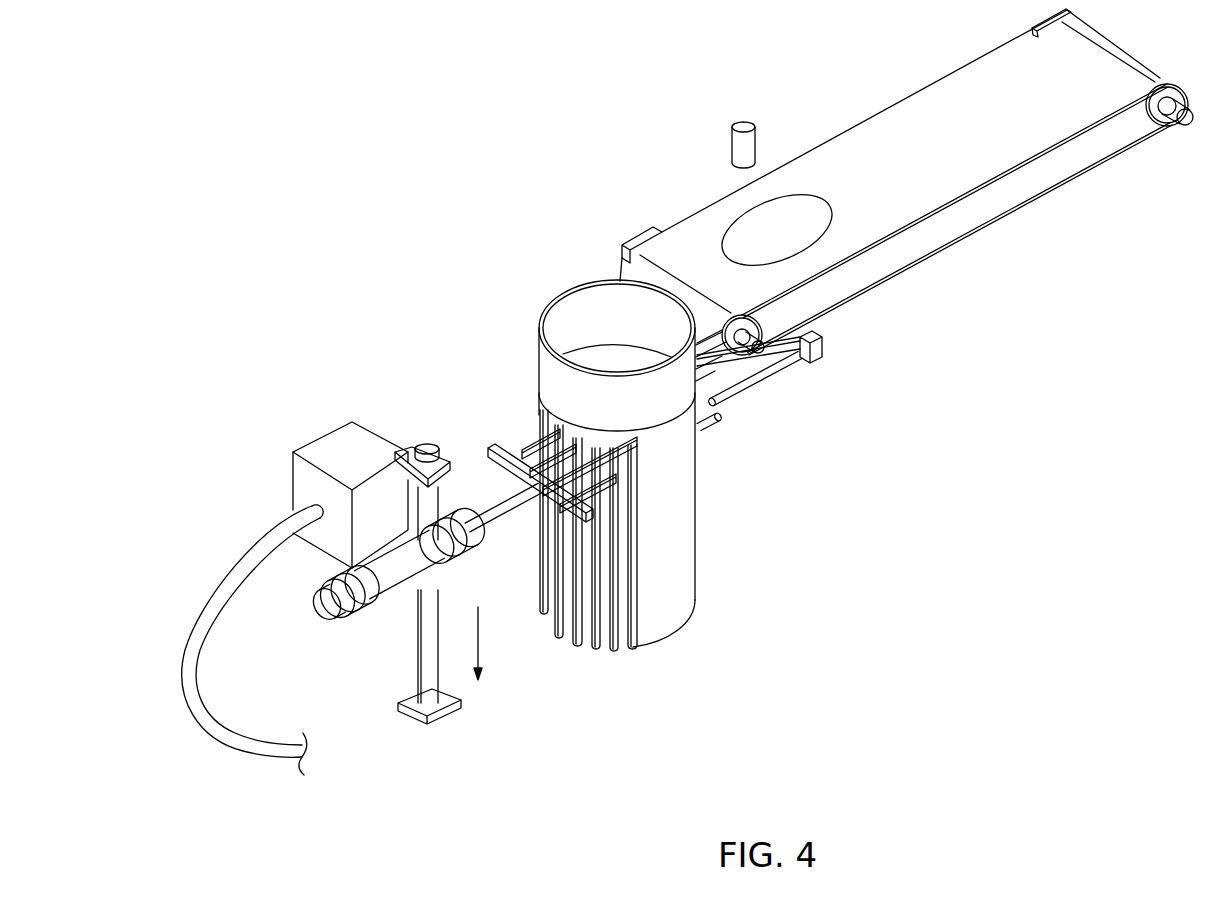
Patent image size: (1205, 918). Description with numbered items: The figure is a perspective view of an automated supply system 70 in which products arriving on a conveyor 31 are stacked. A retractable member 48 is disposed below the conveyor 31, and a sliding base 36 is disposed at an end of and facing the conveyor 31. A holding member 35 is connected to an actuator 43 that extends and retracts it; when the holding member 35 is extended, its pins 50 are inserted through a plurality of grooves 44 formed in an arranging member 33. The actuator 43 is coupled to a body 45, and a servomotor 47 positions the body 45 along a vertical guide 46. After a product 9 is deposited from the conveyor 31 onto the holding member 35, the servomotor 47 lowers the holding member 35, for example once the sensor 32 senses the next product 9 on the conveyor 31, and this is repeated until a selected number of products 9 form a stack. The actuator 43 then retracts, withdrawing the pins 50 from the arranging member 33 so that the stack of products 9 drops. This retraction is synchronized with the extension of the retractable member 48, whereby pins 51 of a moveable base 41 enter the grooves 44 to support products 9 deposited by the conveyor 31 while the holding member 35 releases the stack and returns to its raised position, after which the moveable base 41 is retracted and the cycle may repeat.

The automated supply system 70 is at (279, 134).
The conveyor 31 is at (920, 100).
The sensor 32 is at (733, 148).
The product 9 is at (807, 218).
The retractable member 48 is at (826, 335).
The moveable base 41 is at (832, 350).
The pins 51 is at (744, 388).
The pins 50 is at (713, 432).
The arranging member 33 is at (688, 509).
The grooves 44 is at (632, 622).
The holding member 35 is at (502, 450).
The sliding base 36 is at (486, 647).
The actuator 43 is at (425, 565).
The body 45 is at (416, 512).
The vertical guide 46 is at (428, 652).
The servomotor 47 is at (363, 450).